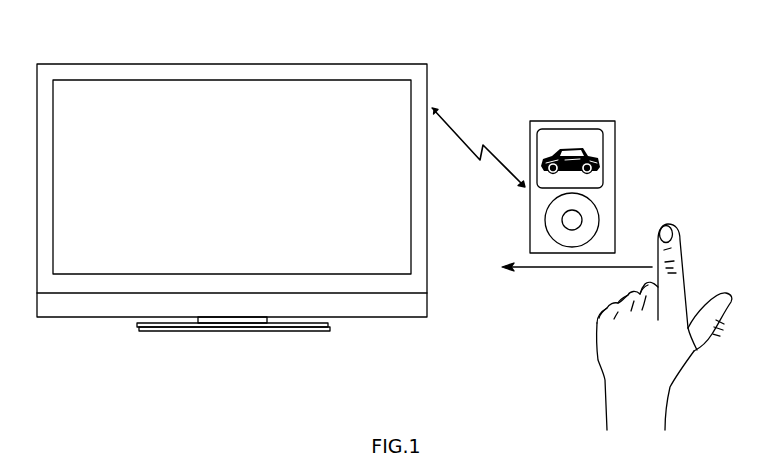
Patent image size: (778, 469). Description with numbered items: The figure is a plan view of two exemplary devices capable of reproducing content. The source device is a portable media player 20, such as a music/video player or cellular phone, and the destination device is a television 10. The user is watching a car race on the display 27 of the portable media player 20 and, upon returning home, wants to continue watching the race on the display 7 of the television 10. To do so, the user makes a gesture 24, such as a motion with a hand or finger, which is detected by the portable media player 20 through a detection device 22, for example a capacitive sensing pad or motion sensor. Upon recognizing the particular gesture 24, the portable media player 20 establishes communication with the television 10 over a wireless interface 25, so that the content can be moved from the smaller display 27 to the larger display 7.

The display 7 is at (216, 124).
The television 10 is at (439, 76).
The portable media player 20 is at (692, 137).
The detection device 22 is at (588, 210).
The gesture 24 is at (687, 232).
The wireless interface 25 is at (465, 148).
The display 27 is at (560, 140).